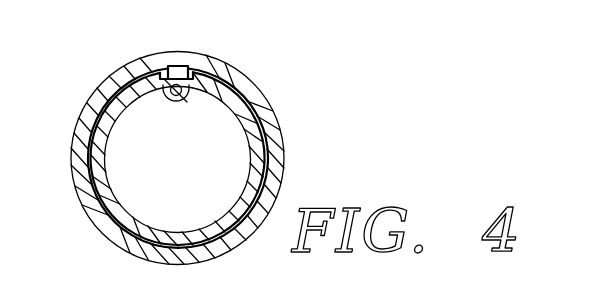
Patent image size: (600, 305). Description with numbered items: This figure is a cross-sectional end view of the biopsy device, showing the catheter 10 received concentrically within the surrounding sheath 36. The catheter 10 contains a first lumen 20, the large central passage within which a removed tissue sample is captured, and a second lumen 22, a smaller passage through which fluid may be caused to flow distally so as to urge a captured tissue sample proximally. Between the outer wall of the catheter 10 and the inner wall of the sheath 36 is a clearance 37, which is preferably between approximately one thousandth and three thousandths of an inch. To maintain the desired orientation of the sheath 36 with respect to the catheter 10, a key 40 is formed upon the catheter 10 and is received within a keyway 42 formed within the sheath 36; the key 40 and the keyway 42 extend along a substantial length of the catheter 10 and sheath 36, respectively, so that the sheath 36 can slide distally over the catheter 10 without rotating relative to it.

The catheter 10 is at (238, 218).
The first lumen 20 is at (167, 186).
The second lumen 22 is at (173, 96).
The sheath 36 is at (111, 77).
The clearance 37 is at (84, 122).
The key 40 is at (179, 66).
The keyway 42 is at (160, 70).